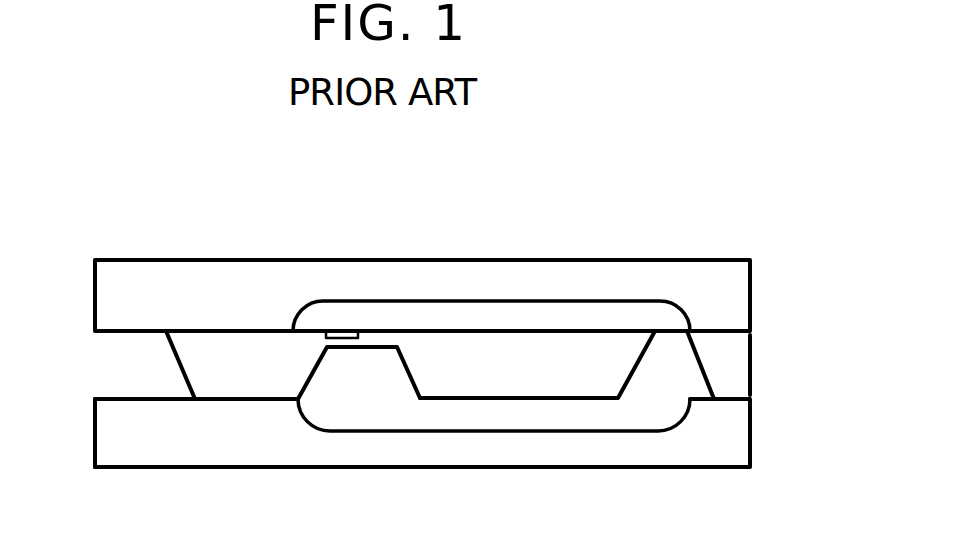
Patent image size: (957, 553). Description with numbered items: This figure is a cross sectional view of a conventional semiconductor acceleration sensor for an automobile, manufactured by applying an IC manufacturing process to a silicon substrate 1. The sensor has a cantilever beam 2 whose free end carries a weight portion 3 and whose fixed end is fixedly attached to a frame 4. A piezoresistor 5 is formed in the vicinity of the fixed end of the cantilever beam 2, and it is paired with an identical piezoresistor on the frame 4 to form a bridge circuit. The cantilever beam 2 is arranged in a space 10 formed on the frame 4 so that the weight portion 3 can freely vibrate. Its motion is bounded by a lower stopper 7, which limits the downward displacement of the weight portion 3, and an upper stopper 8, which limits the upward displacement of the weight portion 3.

The silicon substrate 1 is at (160, 376).
The cantilever beam 2 is at (373, 340).
The weight portion 3 is at (510, 363).
The frame 4 is at (740, 368).
The piezoresistor 5 is at (340, 333).
The lower stopper 7 is at (725, 453).
The upper stopper 8 is at (713, 280).
The space 10 is at (643, 308).